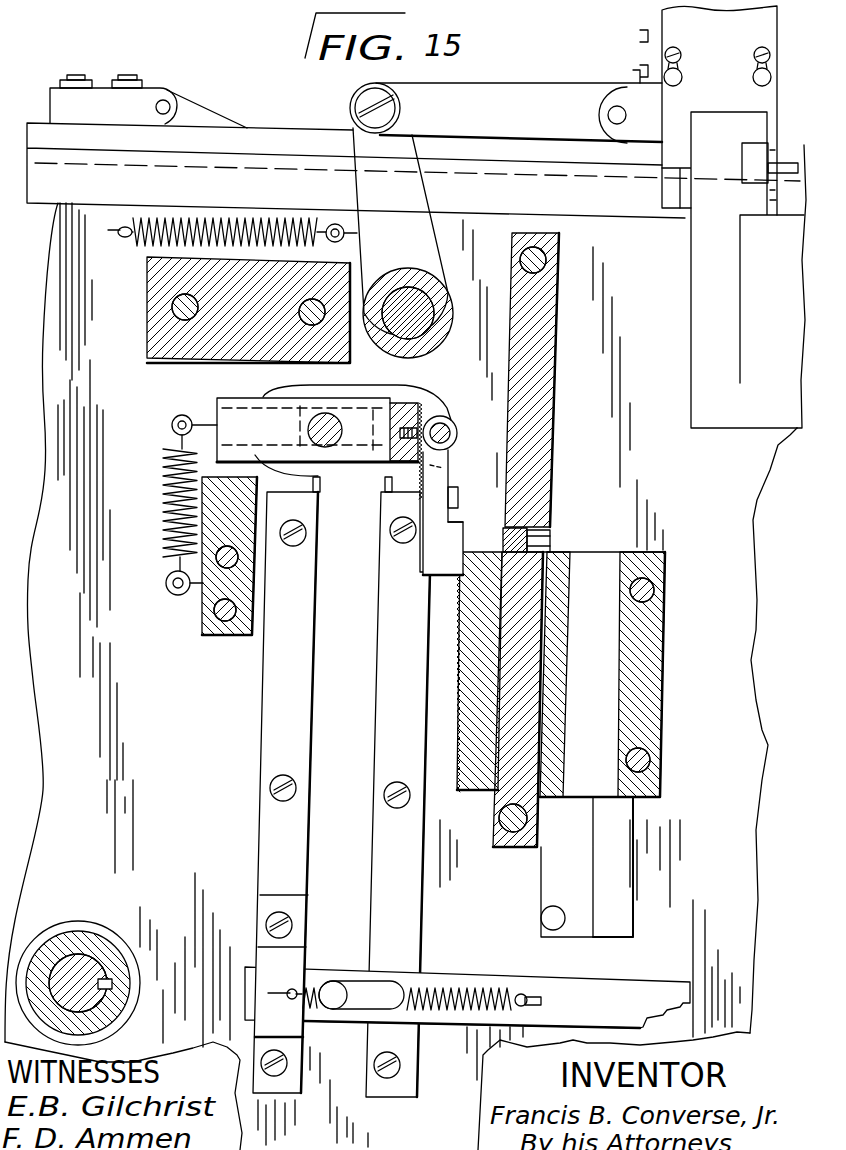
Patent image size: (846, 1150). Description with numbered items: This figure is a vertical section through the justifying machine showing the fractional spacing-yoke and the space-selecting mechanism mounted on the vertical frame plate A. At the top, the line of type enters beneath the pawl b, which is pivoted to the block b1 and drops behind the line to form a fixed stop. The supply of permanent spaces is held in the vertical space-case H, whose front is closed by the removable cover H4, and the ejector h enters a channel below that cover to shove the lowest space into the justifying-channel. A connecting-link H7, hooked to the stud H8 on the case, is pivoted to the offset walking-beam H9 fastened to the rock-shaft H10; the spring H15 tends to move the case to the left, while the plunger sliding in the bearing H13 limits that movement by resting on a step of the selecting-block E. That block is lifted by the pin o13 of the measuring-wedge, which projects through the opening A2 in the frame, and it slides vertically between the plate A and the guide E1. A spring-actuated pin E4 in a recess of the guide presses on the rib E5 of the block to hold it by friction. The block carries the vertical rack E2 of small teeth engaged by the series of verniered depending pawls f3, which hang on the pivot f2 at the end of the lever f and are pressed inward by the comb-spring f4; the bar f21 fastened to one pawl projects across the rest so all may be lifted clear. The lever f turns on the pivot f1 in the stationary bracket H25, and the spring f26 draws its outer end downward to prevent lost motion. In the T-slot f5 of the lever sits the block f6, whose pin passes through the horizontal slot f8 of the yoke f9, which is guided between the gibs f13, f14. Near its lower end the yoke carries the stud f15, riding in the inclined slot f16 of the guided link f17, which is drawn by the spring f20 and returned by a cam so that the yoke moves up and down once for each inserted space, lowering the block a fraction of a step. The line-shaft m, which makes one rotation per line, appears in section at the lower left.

The vertical plate A is at (401, 676).
The opening A2 is at (655, 905).
The pawl b is at (200, 115).
The block b1 is at (50, 100).
The selecting-block E is at (602, 674).
The guide E1 is at (552, 392).
The vertical rack E2 is at (453, 668).
The spring-actuated pin E4 is at (548, 525).
The rib E5 is at (571, 588).
The lever f is at (216, 397).
The pivot f1 is at (331, 447).
The pivot f2 is at (447, 418).
The depending pawls f3 is at (449, 518).
The comb-spring f4 is at (380, 470).
The T-slot f5 is at (344, 406).
The block f6 is at (375, 452).
The horizontal slot f8 is at (288, 425).
The yoke f9 is at (283, 397).
The gib f13 is at (276, 704).
The gib f14 is at (380, 727).
The stud f15 is at (338, 975).
The inclined slot f16 is at (384, 987).
The guided link f17 is at (451, 1001).
The spring f20 is at (448, 1008).
The bar f21 is at (459, 490).
The spring f26 is at (165, 472).
The ejector h is at (742, 160).
The space-case H is at (776, 50).
The removable cover H4 is at (705, 110).
The connecting-link H7 is at (506, 113).
The stud H8 is at (626, 118).
The offset walking-beam H9 is at (400, 232).
The rock-shaft H10 is at (408, 288).
The bearing H13 is at (201, 625).
The spring H15 is at (259, 199).
The stationary bracket H25 is at (147, 300).
The line-shaft m is at (82, 958).
The plate o is at (587, 867).
The pin o13 is at (540, 918).